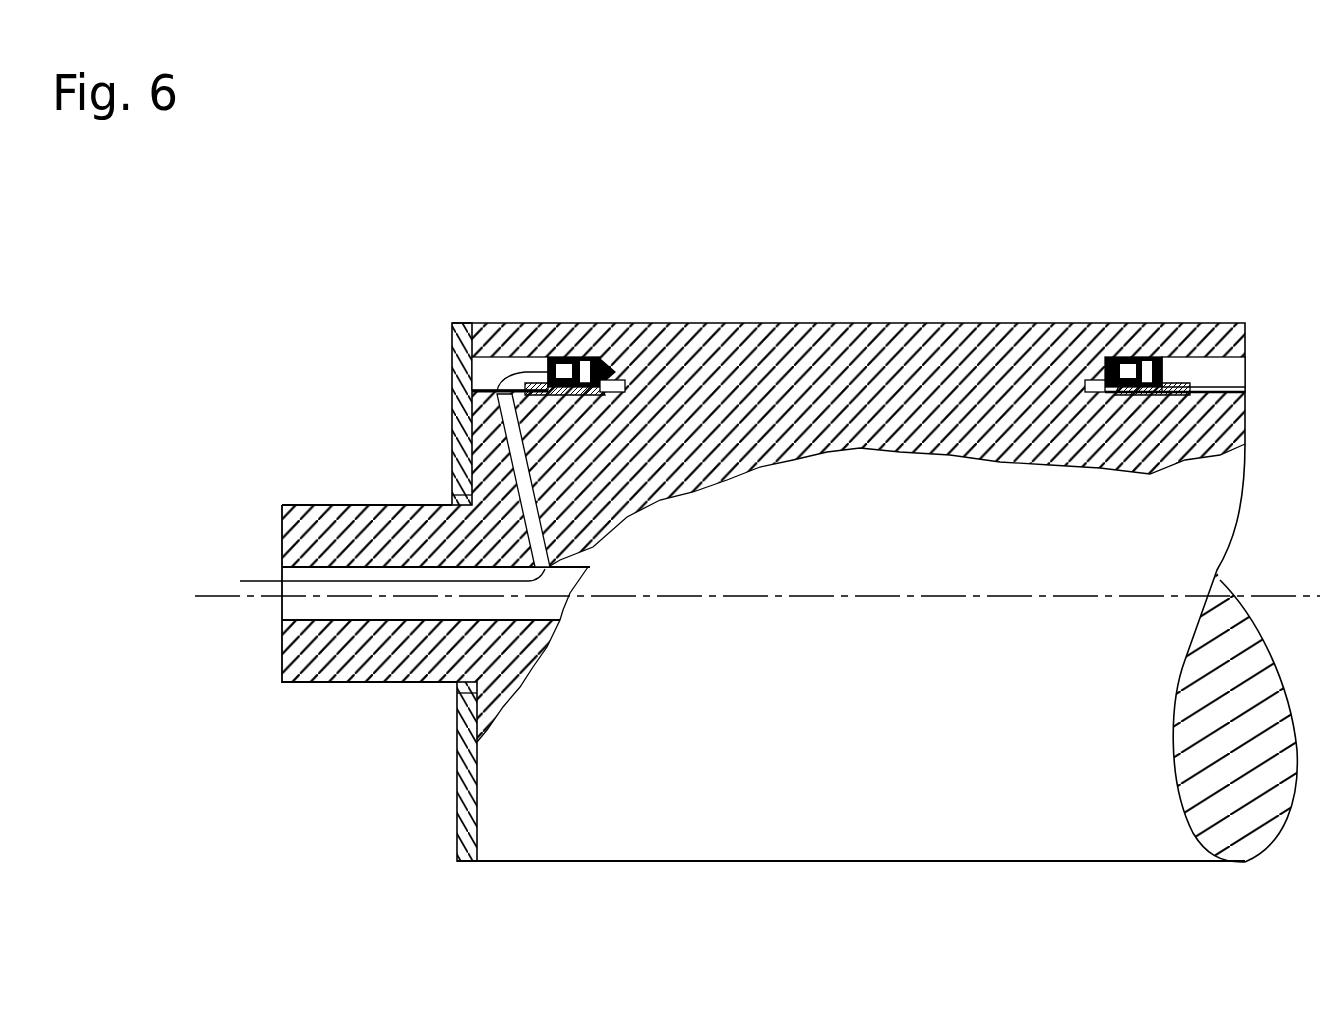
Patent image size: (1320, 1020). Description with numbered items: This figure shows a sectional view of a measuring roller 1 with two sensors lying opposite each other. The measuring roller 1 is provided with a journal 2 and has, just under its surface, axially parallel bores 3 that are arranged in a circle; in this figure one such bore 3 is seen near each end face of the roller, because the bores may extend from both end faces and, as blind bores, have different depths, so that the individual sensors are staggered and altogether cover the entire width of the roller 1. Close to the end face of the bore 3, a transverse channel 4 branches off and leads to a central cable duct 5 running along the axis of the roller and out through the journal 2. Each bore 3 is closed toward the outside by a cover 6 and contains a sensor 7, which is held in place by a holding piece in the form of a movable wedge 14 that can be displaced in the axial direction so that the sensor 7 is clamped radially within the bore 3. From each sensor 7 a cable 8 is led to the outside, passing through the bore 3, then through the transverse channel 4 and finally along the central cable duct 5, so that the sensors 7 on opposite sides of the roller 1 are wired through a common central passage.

The measuring roller 1 is at (1218, 423).
The journal 2 is at (390, 663).
The axially parallel bore 3 is at (490, 365).
The transverse channel 4 is at (490, 413).
The central cable duct 5 is at (293, 607).
The cover 6 is at (457, 785).
The sensor 7 is at (582, 375).
The cable 8 is at (517, 475).
The movable wedge 14 is at (565, 395).